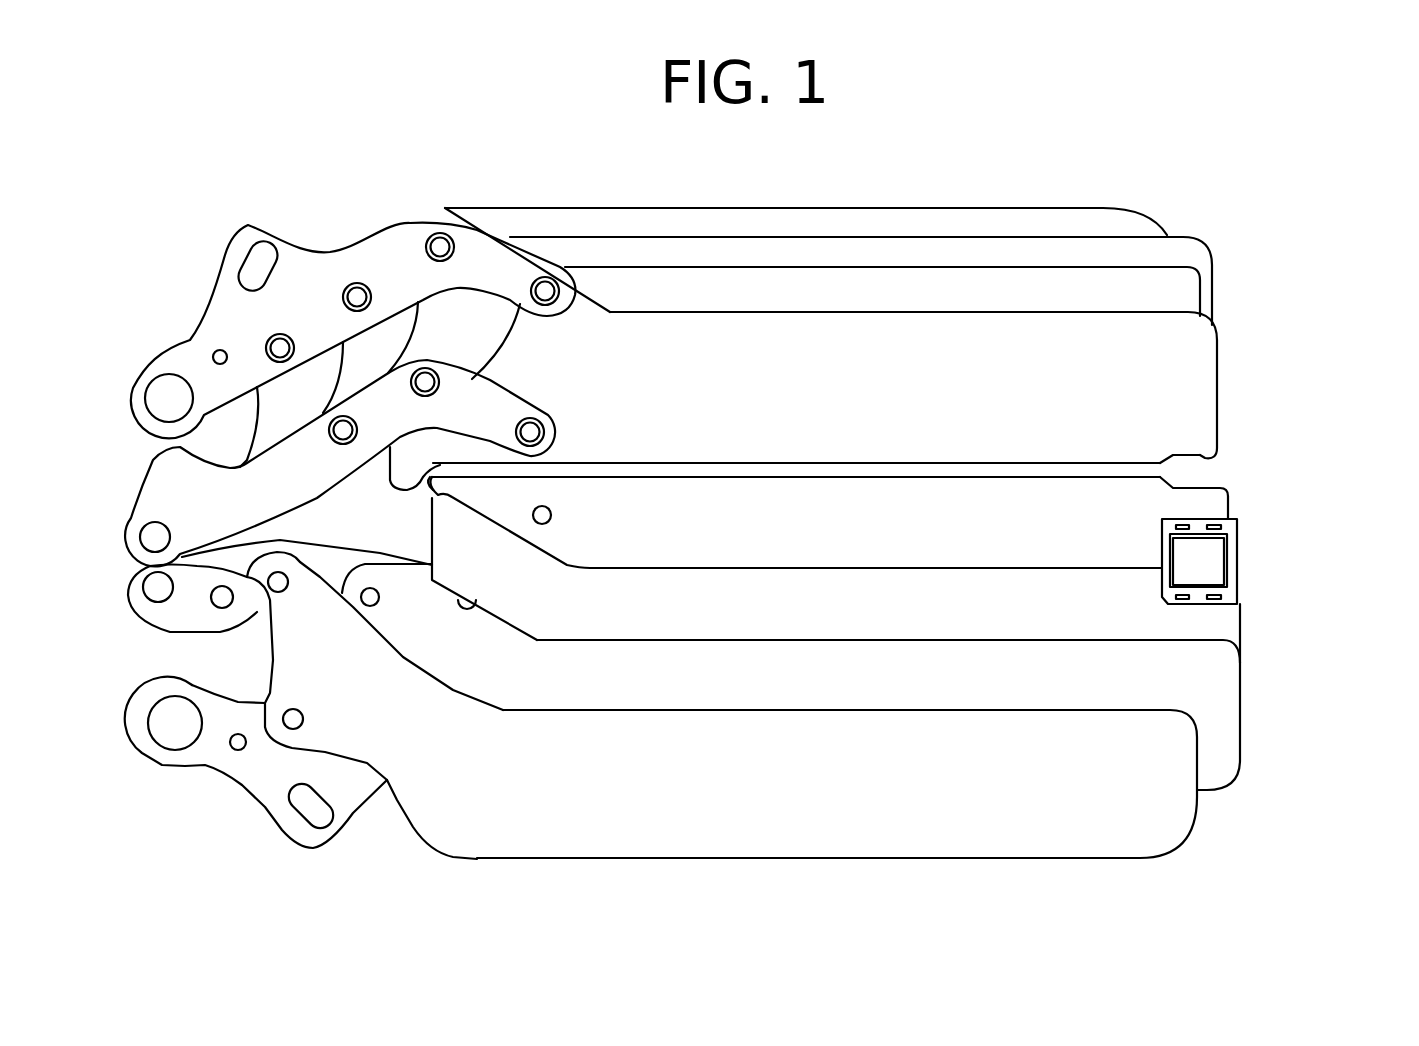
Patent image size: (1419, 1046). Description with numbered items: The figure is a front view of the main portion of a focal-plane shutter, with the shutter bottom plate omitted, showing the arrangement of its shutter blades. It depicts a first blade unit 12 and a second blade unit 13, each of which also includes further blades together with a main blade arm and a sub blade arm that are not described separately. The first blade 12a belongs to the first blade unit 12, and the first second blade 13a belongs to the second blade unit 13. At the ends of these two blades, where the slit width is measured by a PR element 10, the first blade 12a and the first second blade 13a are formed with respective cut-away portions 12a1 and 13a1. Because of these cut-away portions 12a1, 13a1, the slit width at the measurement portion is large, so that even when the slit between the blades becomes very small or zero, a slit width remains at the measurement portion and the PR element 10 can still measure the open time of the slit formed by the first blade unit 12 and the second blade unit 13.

The PR element 10 is at (1227, 553).
The first blade unit 12 is at (920, 667).
The first blade 12a is at (913, 558).
The cut-away portion 12a1 is at (1203, 482).
The second blade unit 13 is at (911, 339).
The first second blade 13a is at (911, 391).
The cut-away portion 13a1 is at (1200, 465).